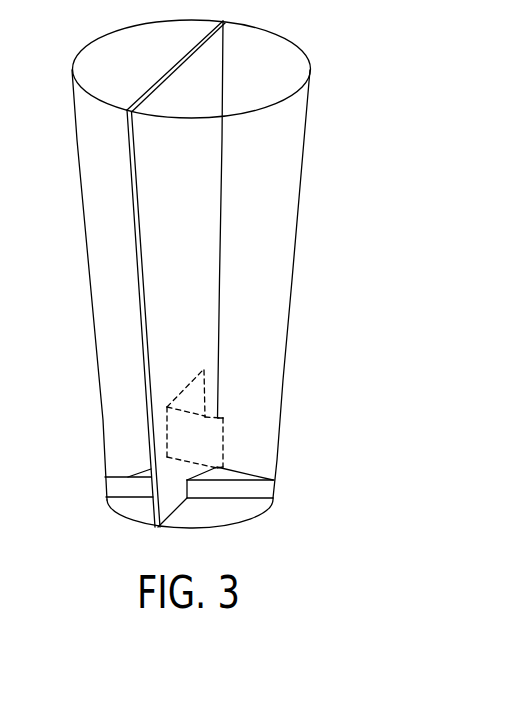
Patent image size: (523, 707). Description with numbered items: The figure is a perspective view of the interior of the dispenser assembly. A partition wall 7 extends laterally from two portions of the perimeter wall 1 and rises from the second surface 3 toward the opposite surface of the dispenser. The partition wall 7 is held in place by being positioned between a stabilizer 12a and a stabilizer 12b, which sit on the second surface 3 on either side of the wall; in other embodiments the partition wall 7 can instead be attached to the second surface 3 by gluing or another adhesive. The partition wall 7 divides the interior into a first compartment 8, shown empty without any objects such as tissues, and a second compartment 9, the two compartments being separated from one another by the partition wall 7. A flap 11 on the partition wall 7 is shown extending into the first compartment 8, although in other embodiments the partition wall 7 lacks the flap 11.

The perimeter wall 1 is at (302, 180).
The second surface 3 is at (247, 520).
The partition wall 7 is at (210, 222).
The first compartment 8 is at (270, 327).
The second compartment 9 is at (110, 315).
The flap 11 is at (222, 447).
The stabilizer 12a is at (260, 492).
The stabilizer 12b is at (118, 487).